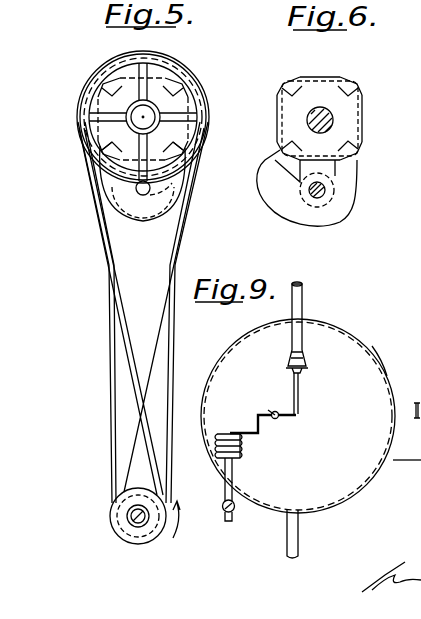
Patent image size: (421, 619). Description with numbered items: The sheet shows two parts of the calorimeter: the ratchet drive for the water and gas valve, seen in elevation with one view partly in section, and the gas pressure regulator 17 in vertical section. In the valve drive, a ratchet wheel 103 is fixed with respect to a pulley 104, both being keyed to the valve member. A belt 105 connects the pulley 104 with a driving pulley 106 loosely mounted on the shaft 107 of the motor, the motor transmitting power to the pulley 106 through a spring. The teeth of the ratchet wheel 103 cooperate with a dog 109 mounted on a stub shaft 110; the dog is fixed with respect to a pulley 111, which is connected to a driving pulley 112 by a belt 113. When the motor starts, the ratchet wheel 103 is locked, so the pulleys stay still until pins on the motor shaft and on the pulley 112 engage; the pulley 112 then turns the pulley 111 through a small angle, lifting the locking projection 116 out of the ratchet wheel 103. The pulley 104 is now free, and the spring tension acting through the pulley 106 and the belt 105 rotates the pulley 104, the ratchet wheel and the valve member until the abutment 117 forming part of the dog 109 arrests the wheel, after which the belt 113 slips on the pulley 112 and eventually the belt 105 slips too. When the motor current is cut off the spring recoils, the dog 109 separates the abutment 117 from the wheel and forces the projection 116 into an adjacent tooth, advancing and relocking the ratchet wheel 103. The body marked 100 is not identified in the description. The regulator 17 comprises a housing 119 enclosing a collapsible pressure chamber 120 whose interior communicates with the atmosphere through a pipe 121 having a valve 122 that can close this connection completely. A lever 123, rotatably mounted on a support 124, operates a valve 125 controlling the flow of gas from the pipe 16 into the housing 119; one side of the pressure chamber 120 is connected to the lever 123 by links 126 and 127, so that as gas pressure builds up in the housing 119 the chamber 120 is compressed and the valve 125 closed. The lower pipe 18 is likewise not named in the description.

In FIG. 5, the pulley 104 is at (176, 62).
In FIG. 5, the ratchet wheel 103 is at (185, 88).
In FIG. 6, the ratchet wheel 103 is at (343, 100).
In FIG. 5, the locking projection 116 is at (100, 141).
In FIG. 6, the locking projection 116 is at (278, 155).
In FIG. 5, the abutment 117 is at (182, 181).
In FIG. 6, the abutment 117 is at (352, 158).
In FIG. 5, the dog 109 is at (100, 178).
In FIG. 6, the dog 109 is at (292, 209).
In FIG. 5, the stub shaft 110 is at (145, 198).
In FIG. 5, the pulley 111 is at (162, 199).
In FIG. 5, the belt 105 is at (96, 214).
In FIG. 5, the belt 113 is at (110, 406).
In FIG. 5, the driving pulley 112 is at (111, 521).
In FIG. 5, the driving pulley 106 is at (128, 534).
In FIG. 5, the shaft 107 is at (140, 523).
In FIG. 6, the block body 100 is at (346, 104).
In FIG. 9, the pressure regulator 17 is at (367, 329).
In FIG. 9, the housing 119 is at (376, 359).
In FIG. 9, the pipe 16 is at (303, 298).
In FIG. 9, the valve 125 is at (300, 373).
In FIG. 9, the link 127 is at (261, 421).
In FIG. 9, the support 124 is at (275, 411).
In FIG. 9, the lever 123 is at (270, 410).
In FIG. 9, the collapsible pressure chamber 120 is at (225, 431).
In FIG. 9, the link 126 is at (243, 440).
In FIG. 9, the pipe 121 is at (224, 489).
In FIG. 9, the valve 122 is at (220, 508).
In FIG. 9, the outlet tube 18 is at (286, 536).